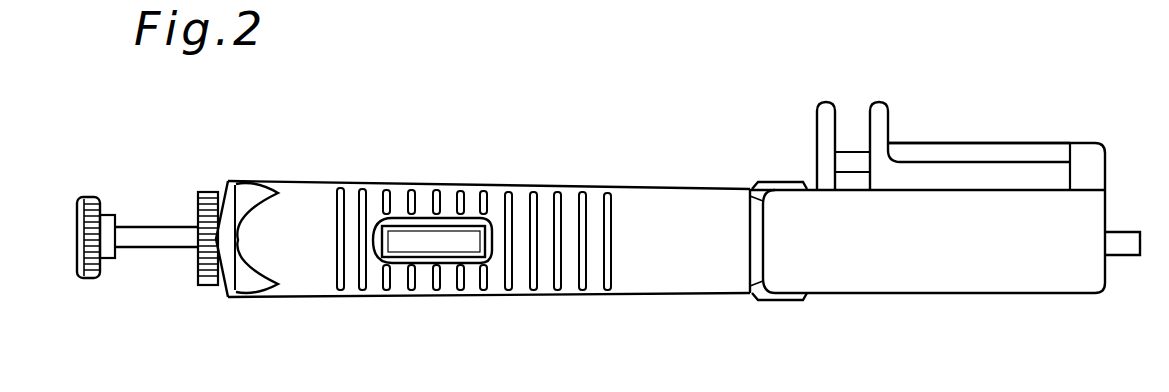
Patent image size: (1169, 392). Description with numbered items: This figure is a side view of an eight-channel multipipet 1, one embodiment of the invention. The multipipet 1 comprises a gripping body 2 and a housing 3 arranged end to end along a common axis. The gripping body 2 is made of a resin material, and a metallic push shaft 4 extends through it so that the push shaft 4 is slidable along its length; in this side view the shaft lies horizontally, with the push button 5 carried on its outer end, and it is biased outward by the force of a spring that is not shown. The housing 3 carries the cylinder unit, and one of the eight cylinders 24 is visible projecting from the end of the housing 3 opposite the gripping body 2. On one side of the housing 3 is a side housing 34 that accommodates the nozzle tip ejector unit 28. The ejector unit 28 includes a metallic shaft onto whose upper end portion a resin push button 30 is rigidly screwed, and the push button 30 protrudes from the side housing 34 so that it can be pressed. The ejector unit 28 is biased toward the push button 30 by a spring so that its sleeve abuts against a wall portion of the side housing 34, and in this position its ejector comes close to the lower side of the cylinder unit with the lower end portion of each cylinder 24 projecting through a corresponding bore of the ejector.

The multipipet 1 is at (528, 166).
The gripping body 2 is at (672, 302).
The housing 3 is at (898, 302).
The push shaft 4 is at (163, 226).
The push button 5 is at (92, 197).
The cylinder 24 is at (1120, 243).
The nozzle tip ejector unit 28 is at (842, 135).
The push button 30 is at (857, 160).
The side housing 34 is at (982, 152).